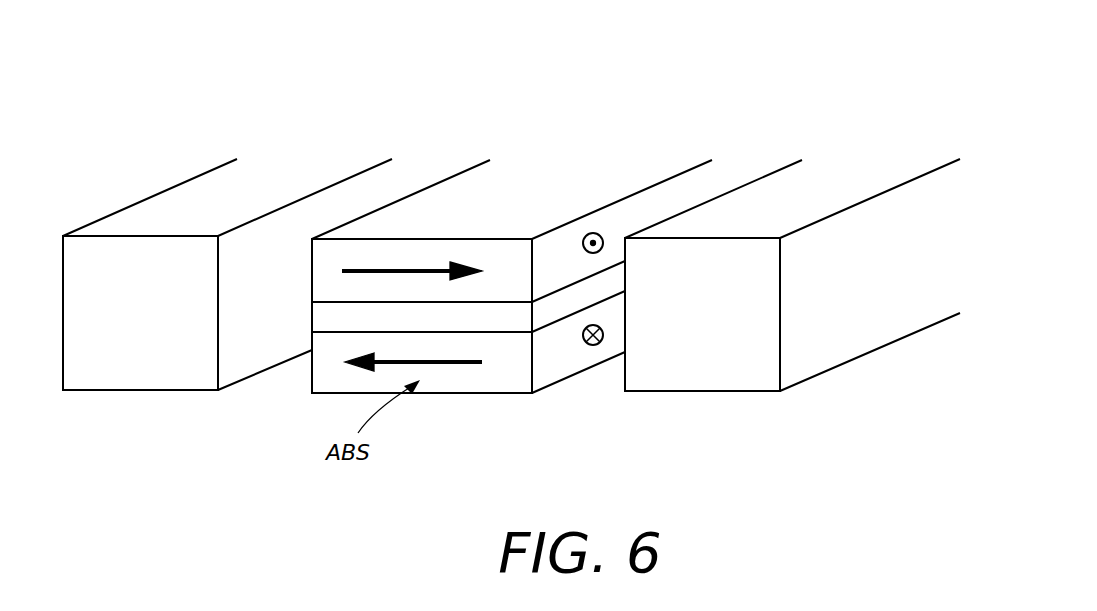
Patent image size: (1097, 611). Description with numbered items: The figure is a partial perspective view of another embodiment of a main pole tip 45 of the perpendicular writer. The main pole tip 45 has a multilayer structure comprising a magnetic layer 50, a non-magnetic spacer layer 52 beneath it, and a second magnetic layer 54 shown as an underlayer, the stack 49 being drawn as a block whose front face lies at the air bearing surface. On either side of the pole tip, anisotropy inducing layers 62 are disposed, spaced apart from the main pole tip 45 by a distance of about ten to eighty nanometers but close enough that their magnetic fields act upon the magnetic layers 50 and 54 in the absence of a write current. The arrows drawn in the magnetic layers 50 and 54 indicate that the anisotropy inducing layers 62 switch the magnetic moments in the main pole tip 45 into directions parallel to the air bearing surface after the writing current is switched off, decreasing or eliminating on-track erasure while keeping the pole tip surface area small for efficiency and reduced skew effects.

The main pole tip 45 is at (475, 209).
The sensor stack 49 is at (482, 239).
The magnetic layer 50 is at (318, 268).
The non-magnetic spacer layer 52 is at (320, 315).
The magnetic layer 54 is at (323, 358).
The anisotropy inducing layers 62 is at (180, 378).